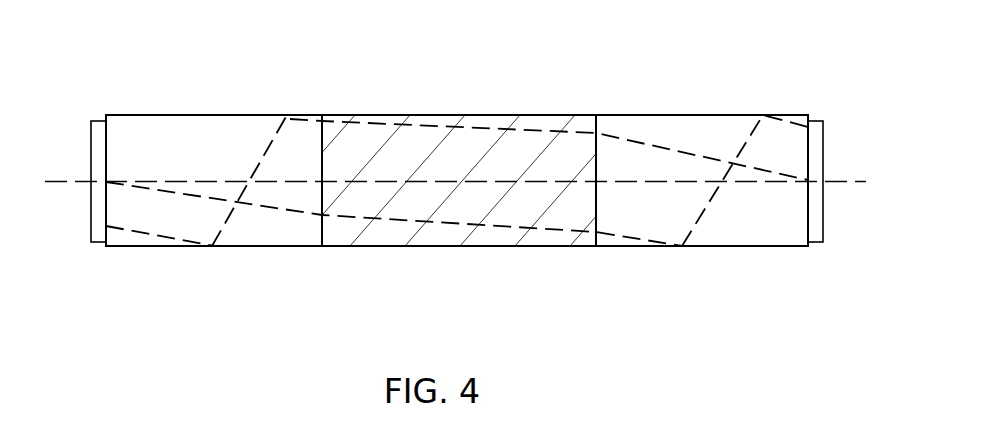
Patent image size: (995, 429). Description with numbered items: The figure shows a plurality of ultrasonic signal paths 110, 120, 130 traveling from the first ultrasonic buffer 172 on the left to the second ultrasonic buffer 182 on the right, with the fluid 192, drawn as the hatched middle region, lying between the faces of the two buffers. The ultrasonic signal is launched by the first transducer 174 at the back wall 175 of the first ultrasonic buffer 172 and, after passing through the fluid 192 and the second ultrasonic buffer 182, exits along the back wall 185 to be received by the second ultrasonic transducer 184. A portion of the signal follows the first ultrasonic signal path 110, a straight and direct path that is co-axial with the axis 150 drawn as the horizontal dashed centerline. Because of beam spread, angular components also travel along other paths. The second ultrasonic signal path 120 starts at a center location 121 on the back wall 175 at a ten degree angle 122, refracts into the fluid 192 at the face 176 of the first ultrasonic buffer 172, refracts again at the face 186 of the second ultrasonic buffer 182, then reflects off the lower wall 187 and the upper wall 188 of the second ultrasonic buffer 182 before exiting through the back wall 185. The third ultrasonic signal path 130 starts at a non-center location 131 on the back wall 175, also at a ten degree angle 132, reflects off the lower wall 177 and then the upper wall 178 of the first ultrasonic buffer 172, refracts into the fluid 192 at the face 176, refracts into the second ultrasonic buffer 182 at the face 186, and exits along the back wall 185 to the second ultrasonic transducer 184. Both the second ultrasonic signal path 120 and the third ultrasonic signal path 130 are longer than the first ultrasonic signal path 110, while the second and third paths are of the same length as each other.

The first ultrasonic signal path 110 is at (373, 177).
The second ultrasonic signal path 120 is at (443, 225).
The center location 121 is at (113, 171).
The 10 degree angle 122 is at (222, 198).
The third ultrasonic signal path 130 is at (448, 127).
The non-center location 131 is at (111, 223).
The 10 degree angle 132 is at (170, 237).
The axis 150 is at (853, 184).
The first ultrasonic buffer 172 is at (290, 236).
The first transducer 174 is at (92, 158).
The back wall 175 is at (96, 118).
The face 176 is at (330, 247).
The lower wall 177 is at (121, 248).
The upper wall 178 is at (197, 115).
The second ultrasonic buffer 182 is at (780, 235).
The second ultrasonic transducer 184 is at (823, 158).
The back wall 185 is at (817, 119).
The face 186 is at (590, 236).
The lower wall 187 is at (630, 248).
The upper wall 188 is at (677, 115).
The fluid 192 is at (333, 168).